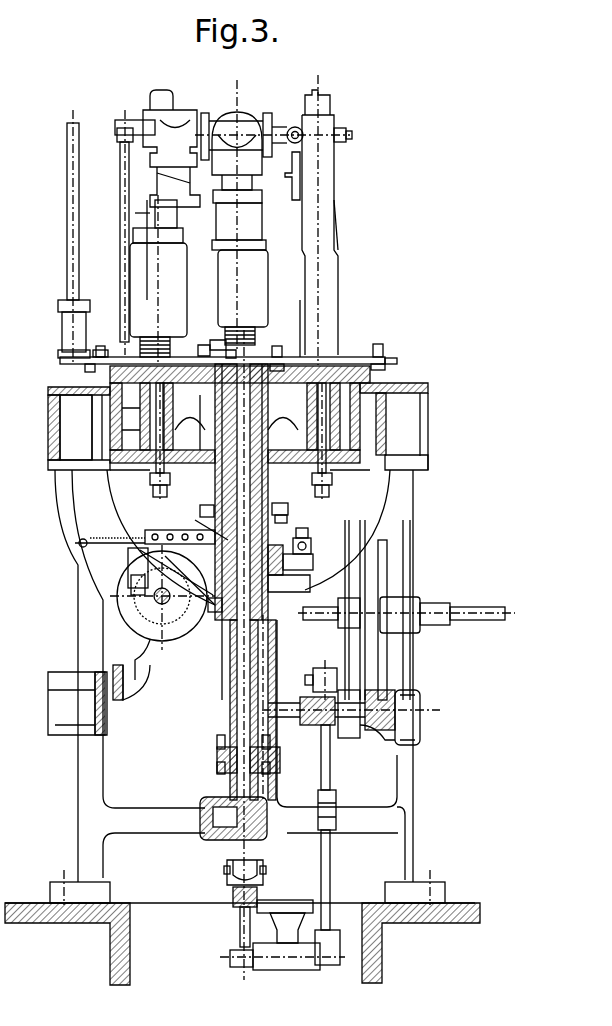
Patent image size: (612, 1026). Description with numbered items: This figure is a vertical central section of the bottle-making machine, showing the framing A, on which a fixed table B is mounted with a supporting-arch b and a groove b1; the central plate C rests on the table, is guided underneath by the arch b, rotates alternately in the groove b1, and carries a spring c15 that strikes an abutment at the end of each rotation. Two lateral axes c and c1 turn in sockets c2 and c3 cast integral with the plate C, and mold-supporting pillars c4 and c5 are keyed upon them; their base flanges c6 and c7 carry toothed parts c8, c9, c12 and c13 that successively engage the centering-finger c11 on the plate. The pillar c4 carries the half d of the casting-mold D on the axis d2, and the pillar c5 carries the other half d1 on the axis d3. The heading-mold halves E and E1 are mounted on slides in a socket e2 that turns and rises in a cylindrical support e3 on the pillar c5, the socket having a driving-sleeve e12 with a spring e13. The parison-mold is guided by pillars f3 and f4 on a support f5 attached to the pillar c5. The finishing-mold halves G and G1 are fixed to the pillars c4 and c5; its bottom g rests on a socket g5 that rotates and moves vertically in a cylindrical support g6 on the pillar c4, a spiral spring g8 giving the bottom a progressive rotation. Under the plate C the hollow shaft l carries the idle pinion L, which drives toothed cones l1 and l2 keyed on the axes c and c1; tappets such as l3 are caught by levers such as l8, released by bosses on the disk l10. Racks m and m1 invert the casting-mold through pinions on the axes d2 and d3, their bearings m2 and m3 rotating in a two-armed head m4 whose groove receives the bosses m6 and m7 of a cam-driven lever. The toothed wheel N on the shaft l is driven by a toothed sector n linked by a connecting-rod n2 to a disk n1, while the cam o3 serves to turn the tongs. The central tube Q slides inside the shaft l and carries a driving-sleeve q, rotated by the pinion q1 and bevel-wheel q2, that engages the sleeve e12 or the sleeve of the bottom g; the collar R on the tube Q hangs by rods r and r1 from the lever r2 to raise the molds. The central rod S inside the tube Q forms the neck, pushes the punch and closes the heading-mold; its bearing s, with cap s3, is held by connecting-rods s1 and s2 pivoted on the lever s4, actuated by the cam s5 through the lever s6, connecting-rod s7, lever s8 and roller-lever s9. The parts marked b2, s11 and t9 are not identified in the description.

The framing A is at (246, 687).
The fixed table B is at (432, 388).
The plate C is at (385, 368).
The casting-mold D is at (240, 122).
The heading-mold half E is at (229, 215).
The heading-mold half E1 is at (256, 177).
The finishing-mold half G is at (322, 105).
The finishing-mold half G1 is at (163, 115).
The pinion L is at (236, 431).
The toothed wheel N is at (289, 571).
The central tube Q is at (320, 712).
The collar R is at (217, 760).
The central rod S is at (227, 855).
The supporting-arch b is at (75, 433).
The groove b1 is at (350, 416).
The left chest wall b2 is at (112, 416).
The lateral axis c is at (318, 415).
The lateral axis c1 is at (215, 416).
The socket c2 is at (314, 430).
The socket c3 is at (136, 416).
The mold-supporting pillar c4 is at (338, 213).
The mold-supporting pillar c5 is at (135, 213).
The flange c6 is at (364, 353).
The flange c7 is at (198, 340).
The toothed part c8 is at (397, 358).
The toothed part c9 is at (299, 328).
The centering-finger c11 is at (222, 351).
The toothed part c12 is at (83, 376).
The toothed part c13 is at (278, 348).
The spring c15 is at (146, 417).
The casting-mold half d is at (269, 118).
The casting-mold half d1 is at (206, 118).
The axis d2 is at (352, 133).
The axis d3 is at (122, 122).
The socket e2 is at (262, 216).
The cylindrical support e3 is at (268, 271).
The driving-sleeve e12 is at (215, 337).
The spring e13 is at (258, 334).
The pillar f3 is at (120, 176).
The pillar f4 is at (67, 196).
The support f5 is at (112, 318).
The mold bottom g is at (183, 235).
The socket g5 is at (108, 352).
The cylindrical support g6 is at (130, 270).
The spiral spring g8 is at (161, 334).
The shaft l is at (258, 406).
The toothed cone l1 is at (354, 482).
The toothed cone l2 is at (129, 481).
The tappet l3 is at (160, 596).
The lever l8 is at (195, 530).
The disk l10 is at (135, 612).
The rack m is at (176, 441).
The rack m1 is at (326, 430).
The bearing m2 is at (148, 486).
The bearing m3 is at (334, 485).
The two-armed head m4 is at (291, 502).
The boss m6 is at (287, 519).
The boss m7 is at (200, 510).
The toothed sector n is at (313, 563).
The disk n1 is at (310, 551).
The connecting-rod n2 is at (308, 530).
The cam o3 is at (406, 604).
The driving-sleeve q is at (366, 727).
The pinion q1 is at (215, 612).
The bevel-wheel q2 is at (276, 655).
The small rod r is at (217, 740).
The small rod r1 is at (272, 752).
The lever r2 is at (227, 744).
The bearing s is at (240, 914).
The connecting-rod s1 is at (233, 895).
The connecting-rod s2 is at (275, 897).
The cap s3 is at (239, 867).
The lever s4 is at (242, 940).
The cam s5 is at (387, 650).
The lever s6 is at (340, 945).
The connecting-rod s7 is at (330, 885).
The lever s8 is at (325, 672).
The roller-lever s9 is at (365, 672).
The worm housing s11 is at (200, 806).
The shaft collar t9 is at (322, 621).